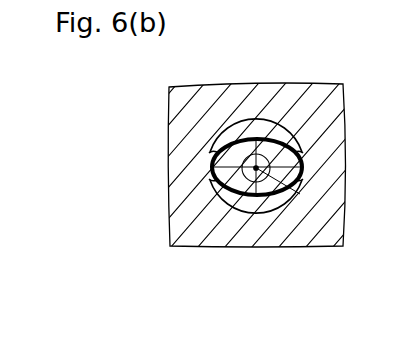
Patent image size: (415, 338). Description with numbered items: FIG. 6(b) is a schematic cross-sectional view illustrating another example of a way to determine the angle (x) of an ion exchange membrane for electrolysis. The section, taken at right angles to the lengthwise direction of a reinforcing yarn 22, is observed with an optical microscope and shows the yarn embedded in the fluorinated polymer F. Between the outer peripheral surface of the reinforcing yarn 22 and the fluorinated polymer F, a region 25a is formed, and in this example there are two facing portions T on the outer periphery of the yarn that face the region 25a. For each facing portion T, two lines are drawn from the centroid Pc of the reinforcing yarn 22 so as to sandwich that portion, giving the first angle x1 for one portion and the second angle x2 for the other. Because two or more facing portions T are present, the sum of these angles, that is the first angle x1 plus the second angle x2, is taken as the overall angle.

The fluorinated polymer F is at (192, 210).
The reinforcing yarn 22 is at (192, 169).
The region (p) 25a is at (258, 125).
The portion T is at (283, 131).
The centroid Pc is at (300, 194).
The angle x1 is at (250, 139).
The angle x2 is at (258, 195).